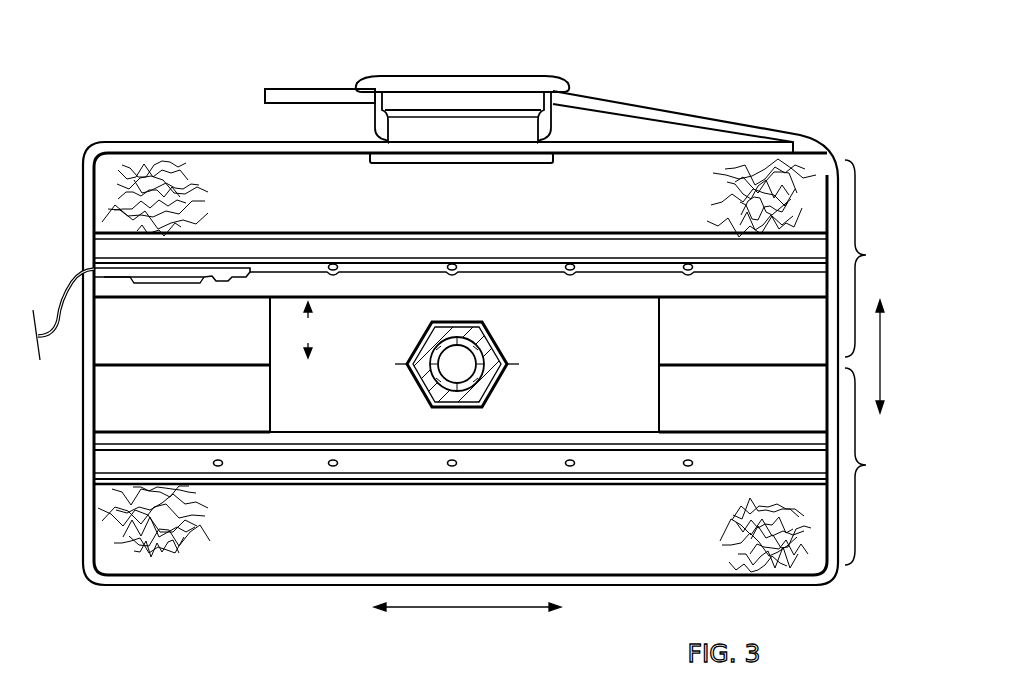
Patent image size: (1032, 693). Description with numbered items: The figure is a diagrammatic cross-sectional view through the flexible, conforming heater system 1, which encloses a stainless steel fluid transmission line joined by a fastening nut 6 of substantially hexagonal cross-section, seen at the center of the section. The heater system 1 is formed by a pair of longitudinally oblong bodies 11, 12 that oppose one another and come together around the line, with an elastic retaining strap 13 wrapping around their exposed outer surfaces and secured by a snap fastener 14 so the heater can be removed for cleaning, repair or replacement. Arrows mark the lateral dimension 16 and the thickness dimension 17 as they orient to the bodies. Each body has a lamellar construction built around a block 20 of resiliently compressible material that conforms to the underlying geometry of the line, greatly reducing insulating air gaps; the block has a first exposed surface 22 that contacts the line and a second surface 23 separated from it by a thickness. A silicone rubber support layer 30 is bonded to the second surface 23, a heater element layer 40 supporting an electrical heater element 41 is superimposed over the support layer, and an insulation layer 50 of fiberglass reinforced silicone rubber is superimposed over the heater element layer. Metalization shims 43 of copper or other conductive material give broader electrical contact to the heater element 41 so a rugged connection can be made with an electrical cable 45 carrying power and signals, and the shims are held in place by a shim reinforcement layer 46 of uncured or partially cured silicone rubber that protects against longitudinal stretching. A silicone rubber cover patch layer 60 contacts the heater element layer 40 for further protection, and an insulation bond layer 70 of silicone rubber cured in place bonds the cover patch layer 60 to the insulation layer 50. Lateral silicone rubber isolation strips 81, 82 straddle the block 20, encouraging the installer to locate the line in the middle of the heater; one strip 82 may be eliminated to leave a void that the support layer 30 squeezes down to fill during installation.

The heater system 1 is at (822, 90).
The fastening nut 6 is at (500, 380).
The oblong body 11 is at (879, 258).
The oblong body 12 is at (504, 466).
The elastic retaining strap 13 is at (176, 141).
The snap fastener 14 is at (452, 75).
The lateral dimension 16 is at (474, 611).
The thickness dimension 17 is at (884, 352).
The block 20 is at (545, 340).
The first exposed surface 22 is at (424, 346).
The second surface 23 is at (345, 300).
The silicone rubber support layer 30 is at (742, 299).
The heater element layer 40 is at (378, 257).
The electrical heater element 41 is at (573, 264).
The metalization shim 43 is at (241, 286).
The electrical cable 45 is at (80, 270).
The shim reinforcement layer 46 is at (306, 260).
The insulation layer 50 is at (480, 206).
The cover patch layer 60 is at (255, 243).
The insulation bond layer 70 is at (425, 232).
The lateral silicone rubber isolation strip 81 is at (194, 350).
The lateral silicone rubber isolation strip 82 is at (712, 350).